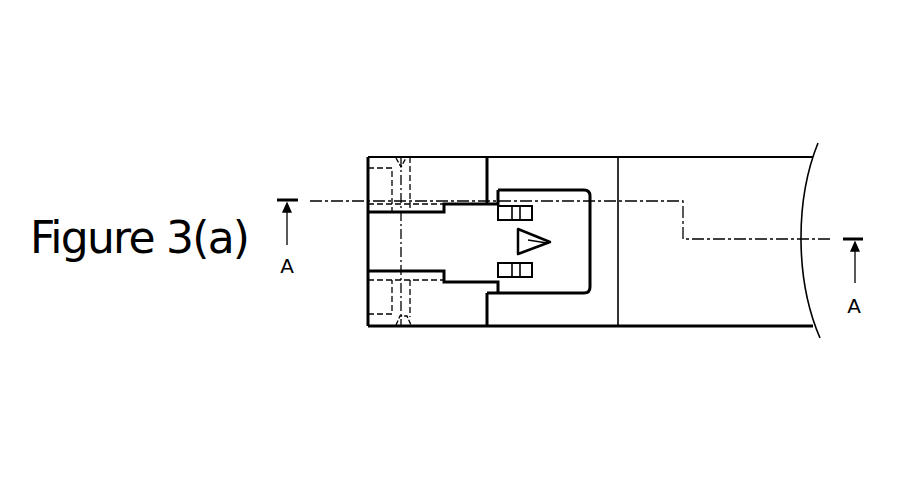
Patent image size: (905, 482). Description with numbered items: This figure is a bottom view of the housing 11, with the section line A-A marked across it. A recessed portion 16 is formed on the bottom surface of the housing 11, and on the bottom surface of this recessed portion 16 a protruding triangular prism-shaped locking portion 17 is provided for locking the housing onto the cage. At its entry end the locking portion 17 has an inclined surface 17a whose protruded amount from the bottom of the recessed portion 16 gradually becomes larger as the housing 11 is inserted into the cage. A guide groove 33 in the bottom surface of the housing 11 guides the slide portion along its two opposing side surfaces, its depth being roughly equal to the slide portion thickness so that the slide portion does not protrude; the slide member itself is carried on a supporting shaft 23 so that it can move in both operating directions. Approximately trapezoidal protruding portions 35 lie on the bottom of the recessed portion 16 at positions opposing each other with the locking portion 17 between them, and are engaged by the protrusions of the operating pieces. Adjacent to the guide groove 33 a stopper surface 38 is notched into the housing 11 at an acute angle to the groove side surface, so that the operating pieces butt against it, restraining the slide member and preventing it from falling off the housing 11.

The housing 11 is at (585, 174).
The recessed portion 16 is at (546, 293).
The locking portion 17 is at (539, 228).
The inclined surface 17a is at (550, 242).
The supporting shaft 23 is at (402, 245).
The guide groove 33 is at (463, 274).
The protruding portion 35 is at (520, 206).
The stopper surface 38 is at (512, 206).